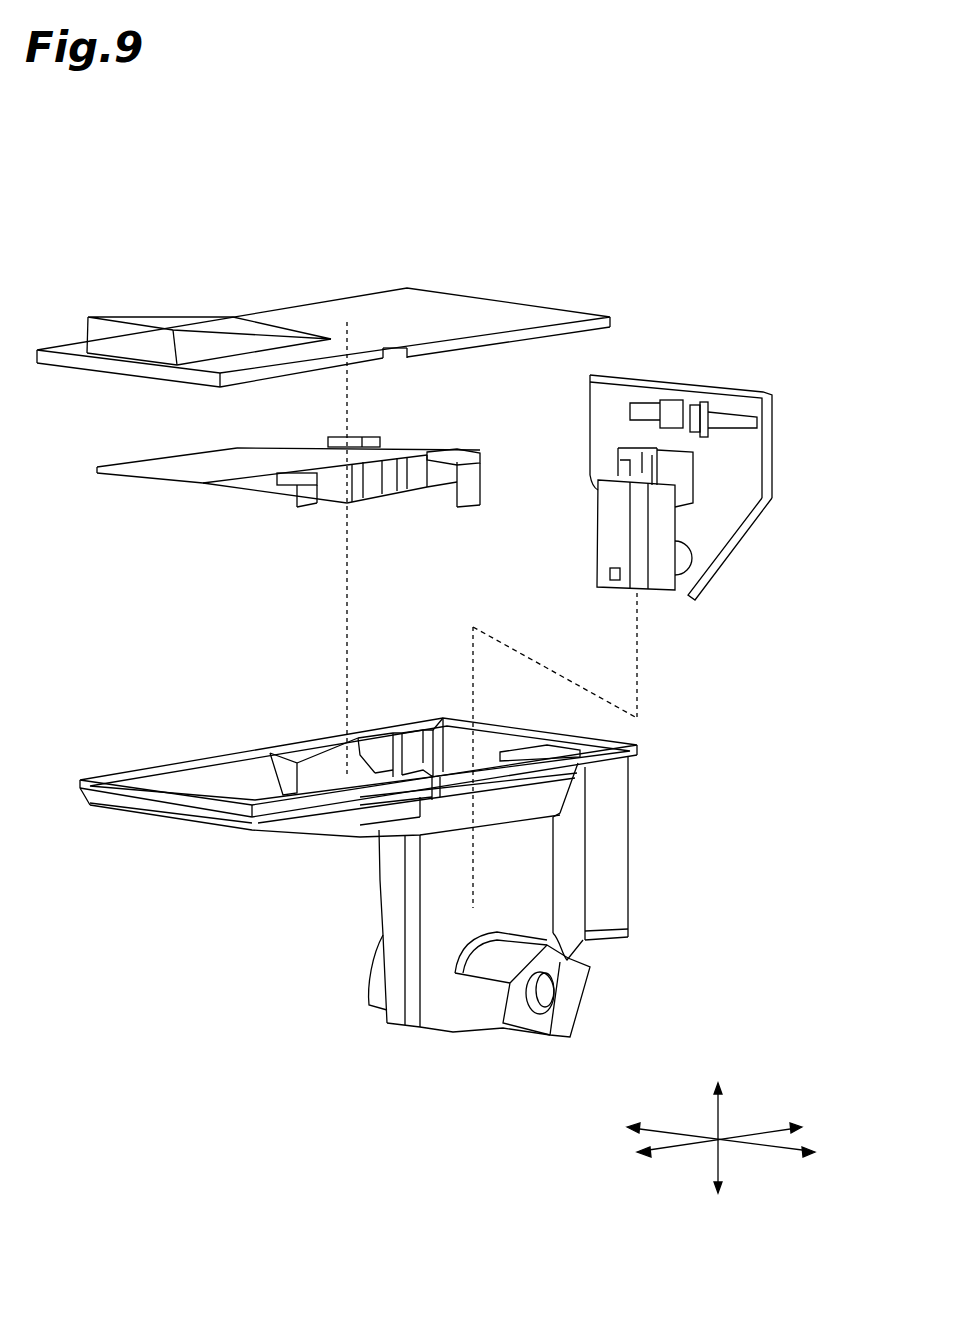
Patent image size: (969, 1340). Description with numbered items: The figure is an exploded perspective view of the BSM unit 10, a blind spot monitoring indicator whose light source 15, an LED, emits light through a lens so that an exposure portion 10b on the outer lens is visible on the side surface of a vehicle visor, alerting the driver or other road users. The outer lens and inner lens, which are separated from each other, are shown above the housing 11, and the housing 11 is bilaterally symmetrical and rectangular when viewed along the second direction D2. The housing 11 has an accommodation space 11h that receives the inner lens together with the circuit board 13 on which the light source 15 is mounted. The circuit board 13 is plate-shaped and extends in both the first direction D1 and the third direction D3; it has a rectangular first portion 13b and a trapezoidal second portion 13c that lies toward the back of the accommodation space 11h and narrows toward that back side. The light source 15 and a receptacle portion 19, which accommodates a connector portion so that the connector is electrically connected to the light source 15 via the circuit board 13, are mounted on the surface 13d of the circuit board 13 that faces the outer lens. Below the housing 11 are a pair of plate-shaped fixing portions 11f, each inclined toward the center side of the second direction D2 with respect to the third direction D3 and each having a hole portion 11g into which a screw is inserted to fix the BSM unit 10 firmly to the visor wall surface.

The BSM unit 10 is at (675, 215).
The exposure portion 10b is at (188, 318).
The housing 11 is at (652, 848).
The fixing portion 11f is at (377, 1000).
The hole portion 11g is at (545, 987).
The accommodation space 11h is at (323, 773).
The circuit board 13 is at (738, 478).
The first portion 13b is at (745, 455).
The second portion 13c is at (705, 550).
The surface 13d is at (615, 422).
The light source 15 is at (668, 405).
The receptacle portion 19 is at (620, 518).
The first direction D1 is at (670, 1130).
The second direction D2 is at (690, 1148).
The third direction D3 is at (720, 1163).